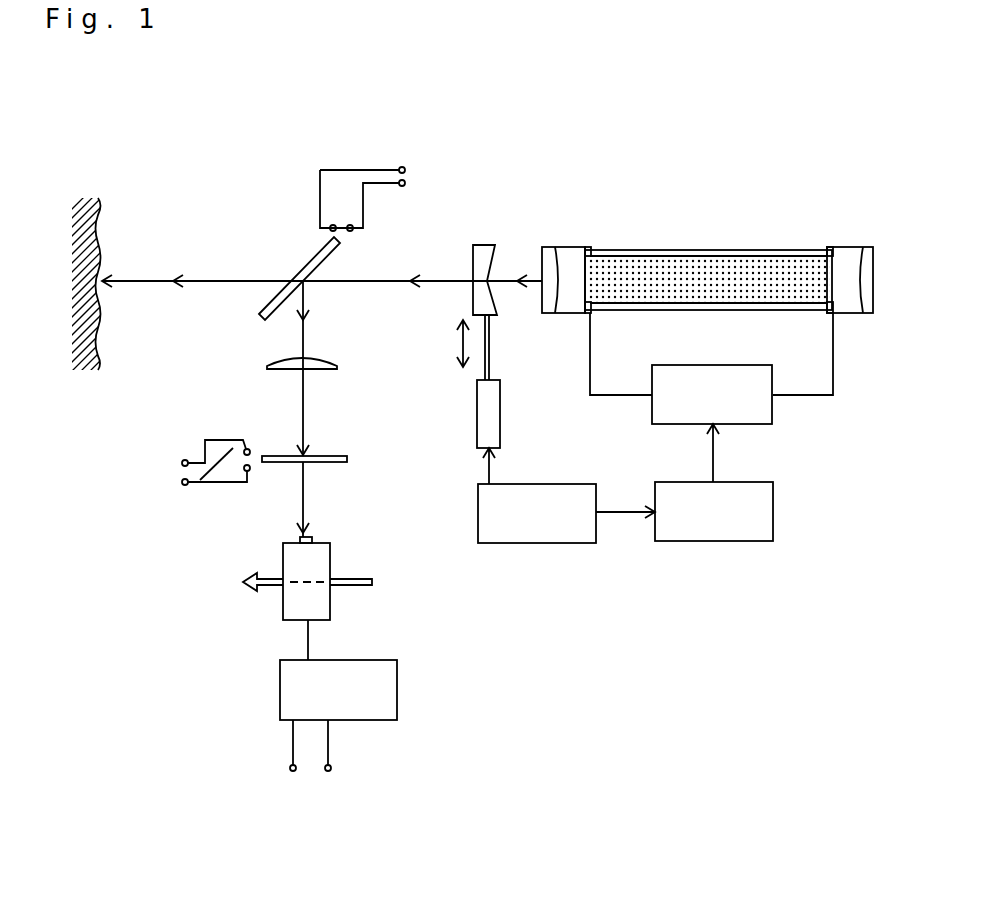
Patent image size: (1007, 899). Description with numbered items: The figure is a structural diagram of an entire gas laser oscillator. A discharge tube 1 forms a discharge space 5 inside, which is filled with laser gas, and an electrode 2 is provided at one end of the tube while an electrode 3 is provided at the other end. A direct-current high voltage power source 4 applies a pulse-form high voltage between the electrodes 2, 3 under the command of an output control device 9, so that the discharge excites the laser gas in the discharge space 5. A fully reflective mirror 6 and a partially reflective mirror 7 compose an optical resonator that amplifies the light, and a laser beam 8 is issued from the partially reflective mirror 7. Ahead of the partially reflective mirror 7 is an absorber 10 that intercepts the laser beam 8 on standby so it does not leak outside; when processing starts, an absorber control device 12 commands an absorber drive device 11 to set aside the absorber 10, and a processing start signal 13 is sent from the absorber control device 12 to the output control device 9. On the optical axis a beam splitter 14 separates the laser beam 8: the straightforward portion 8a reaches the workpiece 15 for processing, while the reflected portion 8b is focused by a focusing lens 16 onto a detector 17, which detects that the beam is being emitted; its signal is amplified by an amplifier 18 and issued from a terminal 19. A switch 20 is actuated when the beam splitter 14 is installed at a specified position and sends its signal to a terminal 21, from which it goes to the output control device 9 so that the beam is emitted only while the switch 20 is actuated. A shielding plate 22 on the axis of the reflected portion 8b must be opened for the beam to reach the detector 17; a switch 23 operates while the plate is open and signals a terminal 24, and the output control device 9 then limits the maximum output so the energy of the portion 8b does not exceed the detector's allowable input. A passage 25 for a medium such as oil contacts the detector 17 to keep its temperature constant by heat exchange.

The discharge tube 1 is at (682, 248).
The electrode 2 is at (590, 313).
The electrode 3 is at (832, 313).
The direct-current high voltage power source 4 is at (762, 418).
The discharge space 5 is at (760, 262).
The fully reflective mirror 6 is at (863, 247).
The partially reflective mirror 7 is at (552, 250).
The laser beam 8 is at (403, 280).
The straightforward portion 8a is at (173, 280).
The reflected portion 8b is at (303, 322).
The output control device 9 is at (738, 542).
The absorber 10 is at (473, 245).
The absorber drive device 11 is at (473, 413).
The absorber control device 12 is at (523, 543).
The processing start signal 13 is at (635, 515).
The beam splitter 14 is at (298, 266).
The workpiece 15 is at (100, 198).
The focusing lens 16 is at (267, 366).
The detector 17 is at (282, 608).
The amplifier 18 is at (277, 695).
The terminal 19 is at (312, 767).
The switch 20 is at (343, 227).
The terminal 21 is at (412, 172).
The shielding plate 22 is at (347, 462).
The switch 23 is at (200, 480).
The terminal 24 is at (182, 467).
The passage 25 is at (242, 583).